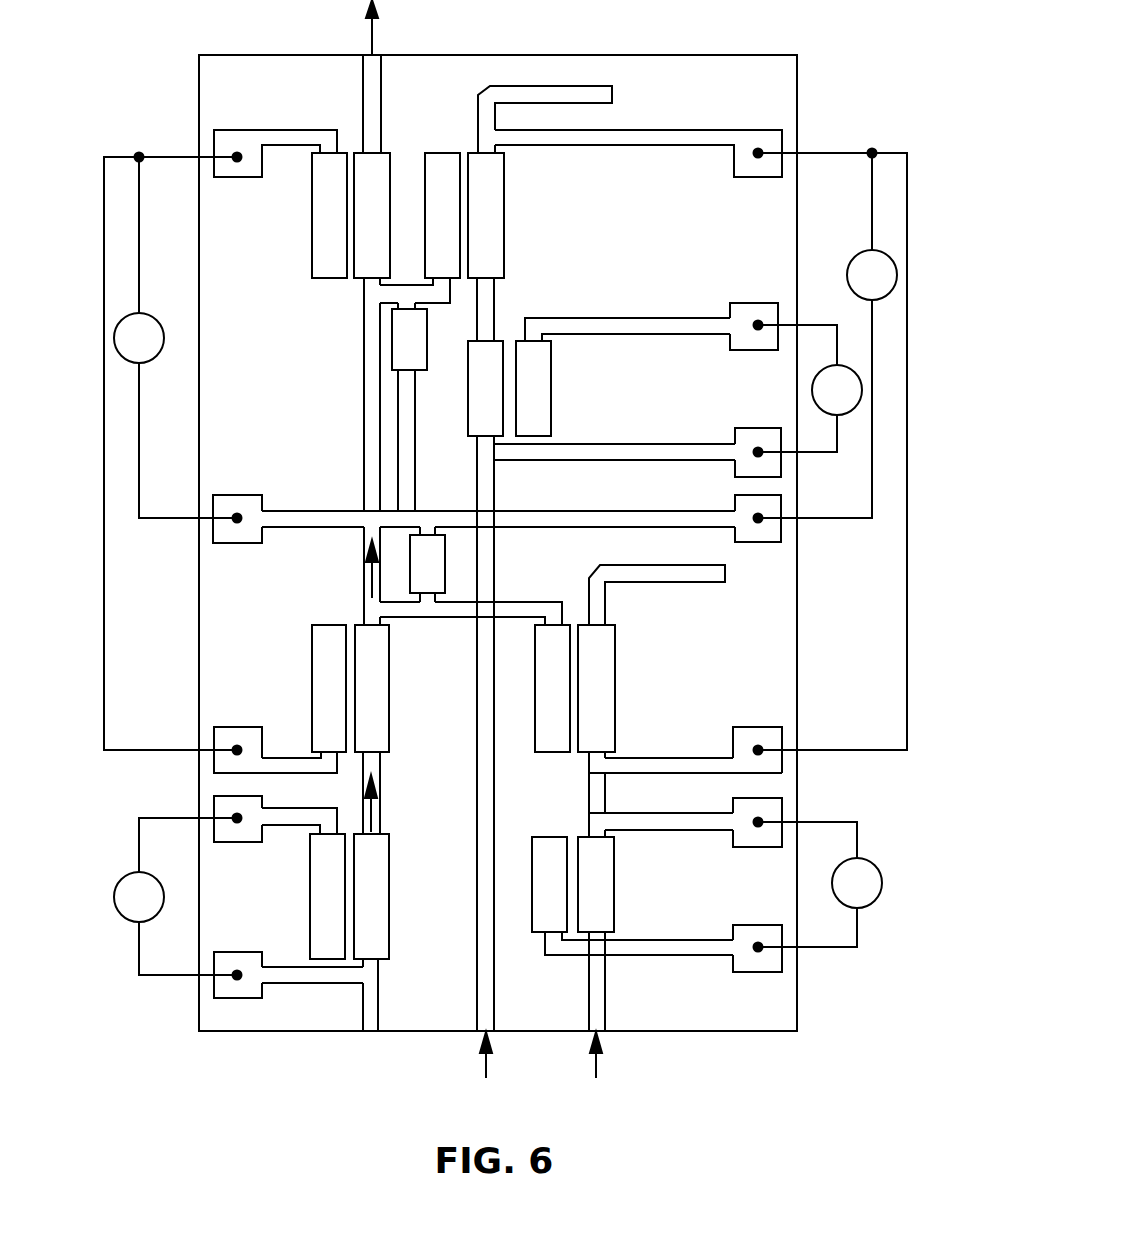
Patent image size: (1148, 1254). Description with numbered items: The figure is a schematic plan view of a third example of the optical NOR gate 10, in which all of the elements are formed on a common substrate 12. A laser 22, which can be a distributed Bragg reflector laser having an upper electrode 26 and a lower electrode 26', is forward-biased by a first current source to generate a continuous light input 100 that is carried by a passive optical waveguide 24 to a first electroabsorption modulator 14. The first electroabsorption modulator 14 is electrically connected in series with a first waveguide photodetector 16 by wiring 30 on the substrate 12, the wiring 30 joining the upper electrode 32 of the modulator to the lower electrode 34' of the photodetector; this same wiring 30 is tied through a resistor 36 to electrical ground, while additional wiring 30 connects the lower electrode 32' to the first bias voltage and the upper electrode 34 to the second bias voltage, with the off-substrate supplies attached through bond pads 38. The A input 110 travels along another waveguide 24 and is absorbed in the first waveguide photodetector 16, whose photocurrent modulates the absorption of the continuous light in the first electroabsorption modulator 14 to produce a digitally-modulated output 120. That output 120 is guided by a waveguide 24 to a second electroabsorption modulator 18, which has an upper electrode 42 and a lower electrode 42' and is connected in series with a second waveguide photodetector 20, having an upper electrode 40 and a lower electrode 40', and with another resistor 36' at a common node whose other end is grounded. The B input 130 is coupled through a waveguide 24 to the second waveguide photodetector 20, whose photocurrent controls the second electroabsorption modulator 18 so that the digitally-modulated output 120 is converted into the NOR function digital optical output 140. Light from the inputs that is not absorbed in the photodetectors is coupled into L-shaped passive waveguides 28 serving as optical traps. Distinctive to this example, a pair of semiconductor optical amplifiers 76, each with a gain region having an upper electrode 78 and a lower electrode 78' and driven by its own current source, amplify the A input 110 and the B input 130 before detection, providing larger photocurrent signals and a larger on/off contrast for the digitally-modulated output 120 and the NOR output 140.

The optical NOR gate 10 is at (792, 1052).
The substrate 12 is at (216, 99).
The first electroabsorption modulator 14 is at (376, 688).
The first waveguide photodetector 16 is at (602, 688).
The second electroabsorption modulator 18 is at (302, 204).
The second waveguide photodetector 20 is at (603, 204).
The laser 22 is at (328, 897).
The passive optical waveguide 24 is at (363, 401).
The upper electrode 26 is at (301, 916).
The lower electrode 26' is at (279, 877).
The L-shaped passive waveguide 28 is at (478, 92).
The wiring 30 is at (663, 462).
The upper electrode 32 is at (372, 688).
The lower electrode 32' is at (329, 688).
The upper electrode 34 is at (596, 688).
The lower electrode 34' is at (552, 688).
The resistor 36 is at (427, 564).
The resistor 36' is at (409, 407).
The bond pad 38 is at (237, 725).
The upper electrode 40 is at (486, 215).
The lower electrode 40' is at (442, 215).
The upper electrode 42 is at (372, 215).
The lower electrode 42' is at (329, 215).
The semiconductor optical amplifier 76 is at (625, 637).
The upper electrode 78 is at (541, 636).
The lower electrode 78' is at (624, 636).
The continuous light input 100 is at (373, 818).
The A input 110 is at (598, 1063).
The digitally-modulated output 120 is at (367, 574).
The B input 130 is at (486, 1062).
The NOR function digital optical output 140 is at (370, 37).